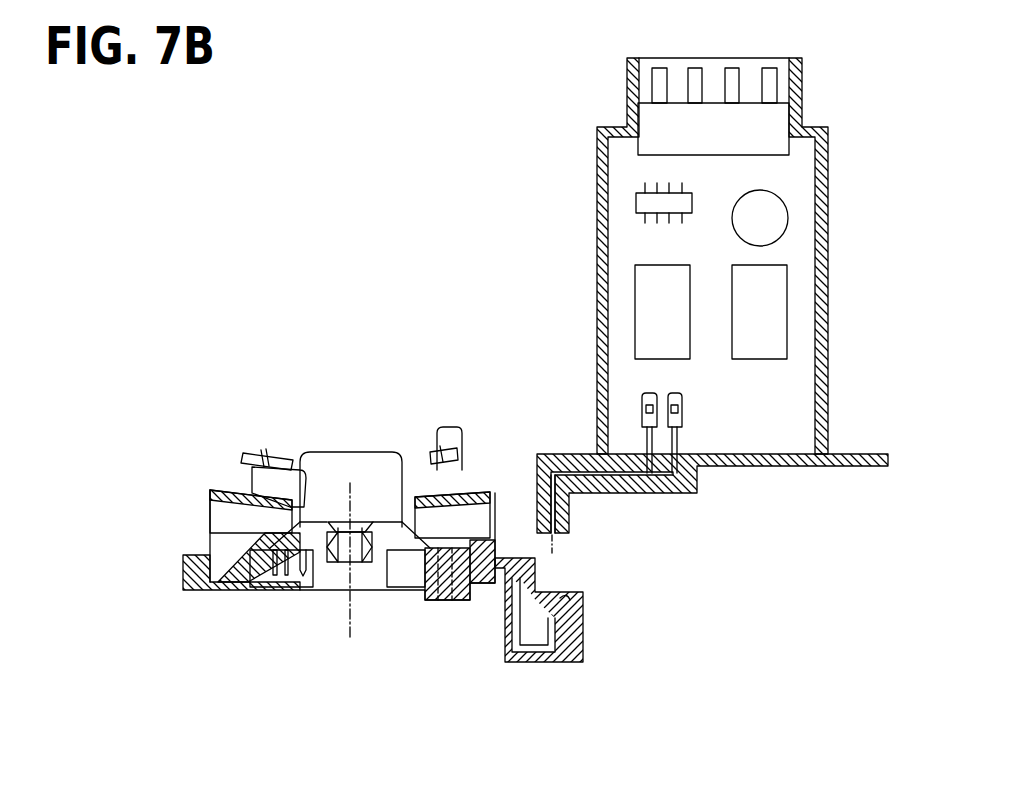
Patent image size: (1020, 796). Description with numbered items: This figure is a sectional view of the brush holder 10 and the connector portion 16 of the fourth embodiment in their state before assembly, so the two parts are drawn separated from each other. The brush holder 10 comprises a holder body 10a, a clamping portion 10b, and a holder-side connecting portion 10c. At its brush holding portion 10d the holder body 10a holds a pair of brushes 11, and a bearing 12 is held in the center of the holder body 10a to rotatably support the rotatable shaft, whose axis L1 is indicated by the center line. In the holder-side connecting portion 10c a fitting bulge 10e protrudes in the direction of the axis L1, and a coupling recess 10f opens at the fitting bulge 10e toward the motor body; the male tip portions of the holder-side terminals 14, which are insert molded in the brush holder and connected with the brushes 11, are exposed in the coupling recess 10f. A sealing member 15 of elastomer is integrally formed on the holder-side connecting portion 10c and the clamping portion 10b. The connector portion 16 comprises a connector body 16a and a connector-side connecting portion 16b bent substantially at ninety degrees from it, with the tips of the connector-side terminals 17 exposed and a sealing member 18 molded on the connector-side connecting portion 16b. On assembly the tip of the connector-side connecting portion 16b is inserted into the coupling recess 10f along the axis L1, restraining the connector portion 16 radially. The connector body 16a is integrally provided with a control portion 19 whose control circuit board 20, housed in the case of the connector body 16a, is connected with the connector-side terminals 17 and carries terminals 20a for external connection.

The brush holder 10 is at (404, 525).
The holder body 10a is at (210, 490).
The clamping portion 10b is at (208, 556).
The holder-side connecting portion 10c is at (555, 622).
The brush holding portion 10d is at (408, 467).
The fitting bulge 10e is at (522, 660).
The coupling recess 10f is at (568, 598).
The brushes 11 is at (256, 452).
The bearing 12 is at (333, 572).
The holder-side terminals 14 is at (562, 587).
The sealing member 15 is at (183, 578).
The connector portion 16 is at (753, 256).
The connector body 16a is at (832, 165).
The connector-side connecting portion 16b is at (570, 518).
The connector-side terminals 17 is at (673, 448).
The sealing member 18 is at (560, 455).
The control portion 19 is at (834, 245).
The control circuit board 20 is at (765, 271).
The terminals for external connection 20a is at (660, 68).
The axis of the rotatable shaft L1 is at (356, 623).